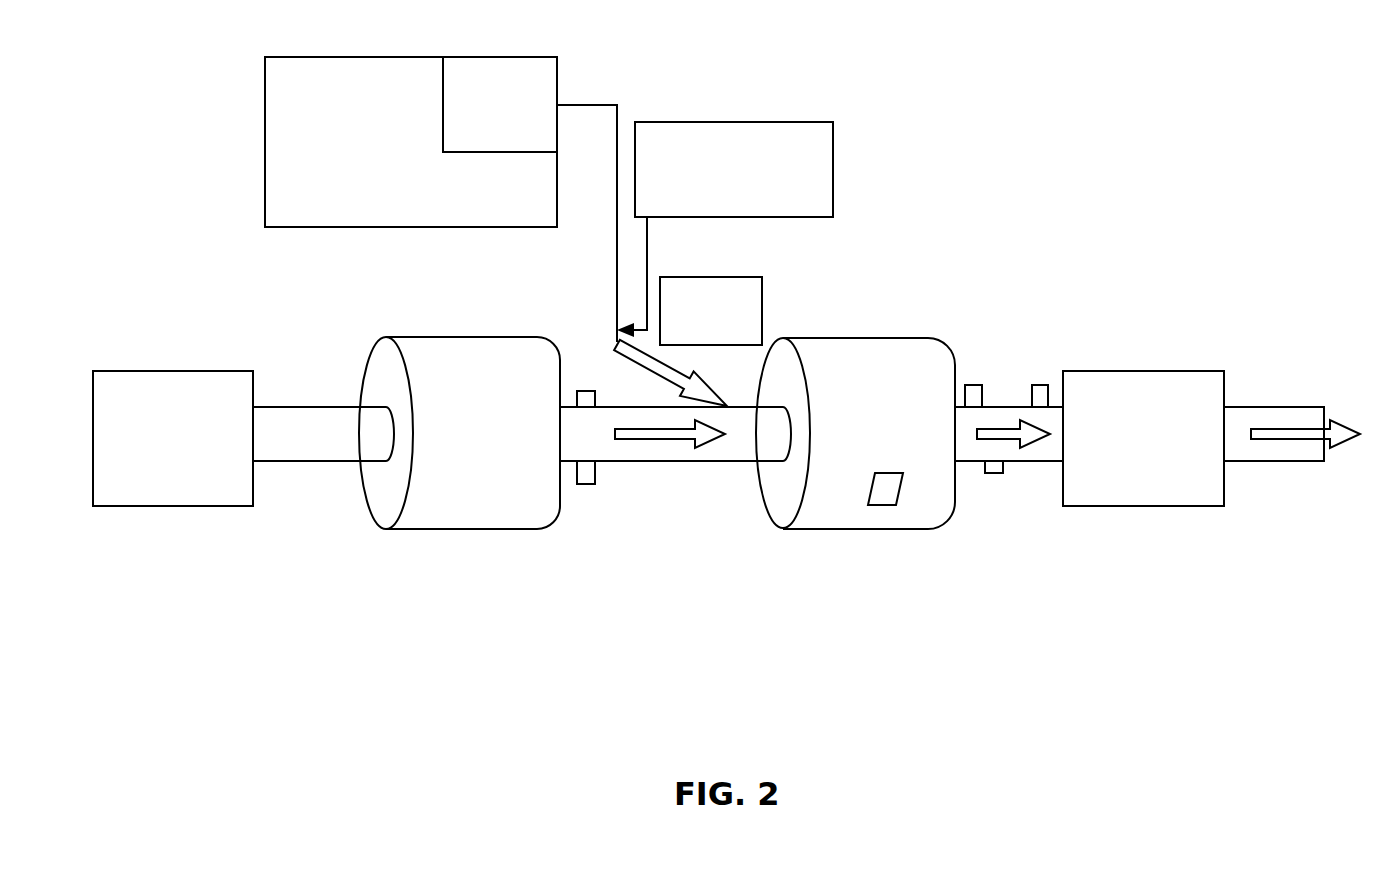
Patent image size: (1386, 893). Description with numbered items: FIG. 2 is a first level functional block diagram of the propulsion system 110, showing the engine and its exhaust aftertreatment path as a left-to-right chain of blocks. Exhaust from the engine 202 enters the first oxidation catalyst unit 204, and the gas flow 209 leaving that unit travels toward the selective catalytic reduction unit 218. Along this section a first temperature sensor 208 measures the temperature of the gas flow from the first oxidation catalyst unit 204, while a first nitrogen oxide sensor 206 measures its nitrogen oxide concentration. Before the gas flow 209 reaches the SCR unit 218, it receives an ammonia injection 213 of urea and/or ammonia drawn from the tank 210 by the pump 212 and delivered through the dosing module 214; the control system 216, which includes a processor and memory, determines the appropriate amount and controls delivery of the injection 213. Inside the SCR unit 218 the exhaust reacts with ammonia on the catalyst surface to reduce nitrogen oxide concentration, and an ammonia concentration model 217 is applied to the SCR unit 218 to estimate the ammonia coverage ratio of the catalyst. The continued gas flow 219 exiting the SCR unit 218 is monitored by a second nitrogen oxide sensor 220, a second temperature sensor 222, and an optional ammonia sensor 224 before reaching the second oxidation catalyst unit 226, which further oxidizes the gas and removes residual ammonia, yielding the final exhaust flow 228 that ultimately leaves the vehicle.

The propulsion system 110 is at (988, 98).
The engine 202 is at (130, 371).
The first oxidation catalyst unit 204 is at (412, 529).
The first nitrogen oxide sensor 206 is at (577, 472).
The first temperature sensor 208 is at (577, 395).
The gas flow 209 is at (710, 440).
The tank 210 is at (303, 57).
The pump 212 is at (481, 57).
The ammonia injection 213 is at (670, 395).
The dosing module 214 is at (722, 277).
The control system 216 is at (792, 122).
The ammonia concentration model 217 is at (886, 495).
The selective catalytic reduction unit 218 is at (810, 529).
The continued gas flow 219 is at (990, 428).
The second nitrogen oxide sensor 220 is at (985, 473).
The second temperature sensor 222 is at (965, 393).
The ammonia sensor 224 is at (1050, 393).
The second oxidation catalyst unit 226 is at (1126, 507).
The final exhaust flow 228 is at (1292, 425).